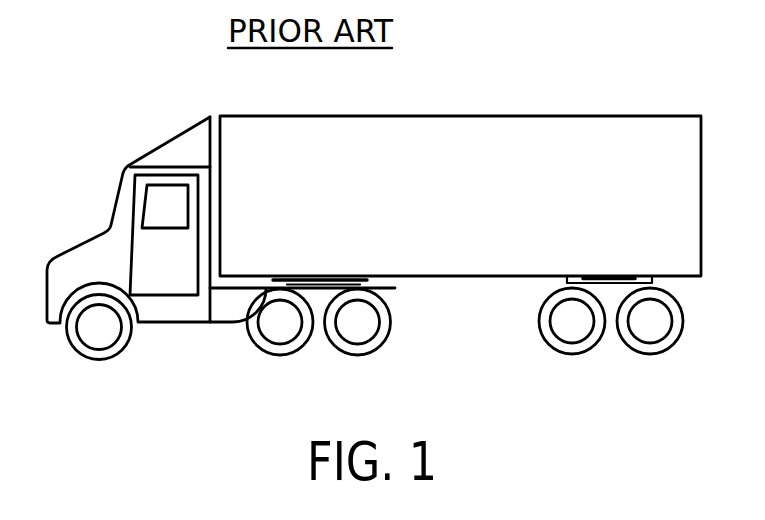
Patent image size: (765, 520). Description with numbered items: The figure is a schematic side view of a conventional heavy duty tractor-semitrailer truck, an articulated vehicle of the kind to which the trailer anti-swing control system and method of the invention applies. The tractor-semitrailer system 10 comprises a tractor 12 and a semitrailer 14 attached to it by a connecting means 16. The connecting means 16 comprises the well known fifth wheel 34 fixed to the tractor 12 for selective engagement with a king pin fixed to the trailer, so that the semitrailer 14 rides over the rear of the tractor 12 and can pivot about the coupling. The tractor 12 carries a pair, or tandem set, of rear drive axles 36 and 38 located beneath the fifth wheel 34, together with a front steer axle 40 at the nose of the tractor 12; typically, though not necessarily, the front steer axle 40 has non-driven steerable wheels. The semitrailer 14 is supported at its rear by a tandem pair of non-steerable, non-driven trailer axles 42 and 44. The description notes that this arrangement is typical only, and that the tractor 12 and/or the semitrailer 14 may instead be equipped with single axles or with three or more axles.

The tractor-semitrailer system 10 is at (429, 108).
The tractor 12 is at (121, 143).
The semitrailer 14 is at (556, 130).
The connecting means 16 is at (345, 265).
The fifth wheel 34 is at (302, 256).
The rear drive axle 36 is at (288, 355).
The rear drive axle 38 is at (348, 355).
The front steer axle 40 is at (102, 359).
The trailer axle 42 is at (572, 354).
The trailer axle 44 is at (668, 352).